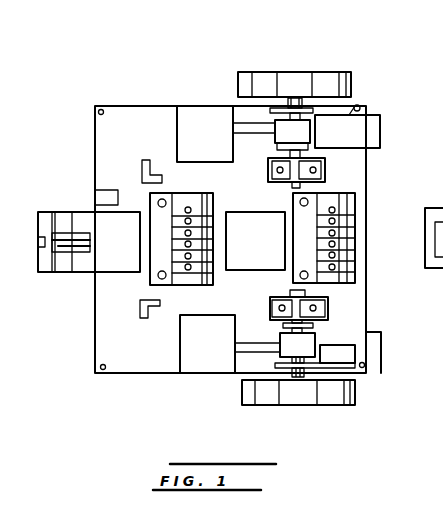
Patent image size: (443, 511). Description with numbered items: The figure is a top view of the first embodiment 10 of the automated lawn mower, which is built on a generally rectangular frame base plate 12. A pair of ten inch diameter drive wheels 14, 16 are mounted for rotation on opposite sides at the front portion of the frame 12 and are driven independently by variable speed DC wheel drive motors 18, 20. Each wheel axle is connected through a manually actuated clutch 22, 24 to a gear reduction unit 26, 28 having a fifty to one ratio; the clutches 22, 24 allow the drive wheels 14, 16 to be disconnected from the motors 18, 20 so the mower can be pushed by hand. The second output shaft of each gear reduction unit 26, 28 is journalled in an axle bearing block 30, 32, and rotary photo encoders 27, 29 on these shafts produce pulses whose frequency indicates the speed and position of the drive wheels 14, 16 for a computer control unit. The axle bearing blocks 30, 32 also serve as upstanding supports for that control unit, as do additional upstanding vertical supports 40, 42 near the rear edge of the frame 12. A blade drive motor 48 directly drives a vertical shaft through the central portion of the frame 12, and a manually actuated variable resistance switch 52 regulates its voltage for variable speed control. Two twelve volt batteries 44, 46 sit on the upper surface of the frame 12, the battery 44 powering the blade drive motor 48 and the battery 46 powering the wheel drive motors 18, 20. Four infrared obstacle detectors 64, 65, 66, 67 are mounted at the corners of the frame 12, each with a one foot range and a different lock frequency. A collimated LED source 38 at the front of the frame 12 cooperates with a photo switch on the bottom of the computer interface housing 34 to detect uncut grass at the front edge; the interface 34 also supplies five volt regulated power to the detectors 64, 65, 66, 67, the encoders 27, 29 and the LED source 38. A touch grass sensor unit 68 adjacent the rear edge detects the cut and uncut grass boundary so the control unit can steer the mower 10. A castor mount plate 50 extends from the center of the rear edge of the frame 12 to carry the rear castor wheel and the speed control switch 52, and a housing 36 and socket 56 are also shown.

The first embodiment 10 is at (183, 25).
The frame base plate 12 is at (147, 110).
The drive wheel 14 is at (290, 75).
The drive wheel 16 is at (355, 398).
The wheel drive motor 18 is at (201, 113).
The wheel drive motor 20 is at (186, 364).
The clutch 22 is at (300, 108).
The clutch 24 is at (267, 363).
The gear reduction unit 26 is at (292, 134).
The rotary photo encoder 27 is at (276, 158).
The gear reduction unit 28 is at (283, 324).
The rotary photo encoder 29 is at (313, 325).
The axle bearing block 30 is at (325, 170).
The axle bearing block 32 is at (328, 308).
The computer interface housing 34 is at (380, 130).
The lower component housing 36 is at (340, 363).
The collimated LED source 38 is at (381, 332).
The upstanding vertical support 40 is at (133, 172).
The upstanding vertical support 42 is at (140, 309).
The battery 44 is at (206, 288).
The battery 46 is at (355, 256).
The blade drive motor 48 is at (258, 223).
The castor mount plate 50 is at (96, 224).
The variable resistance switch 52 is at (76, 252).
The external socket 56 is at (434, 223).
The infrared obstacle detector 64 is at (96, 110).
The infrared obstacle detector 65 is at (100, 367).
The infrared obstacle detector 66 is at (362, 108).
The infrared obstacle detector 67 is at (366, 365).
The touch grass sensor unit 68 is at (95, 190).